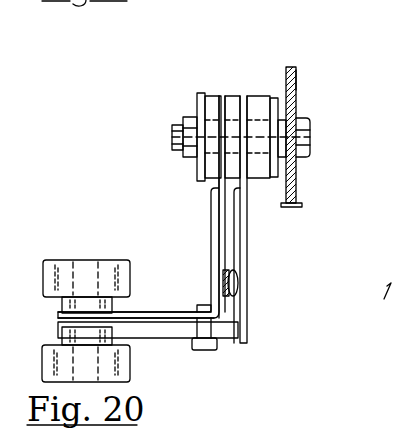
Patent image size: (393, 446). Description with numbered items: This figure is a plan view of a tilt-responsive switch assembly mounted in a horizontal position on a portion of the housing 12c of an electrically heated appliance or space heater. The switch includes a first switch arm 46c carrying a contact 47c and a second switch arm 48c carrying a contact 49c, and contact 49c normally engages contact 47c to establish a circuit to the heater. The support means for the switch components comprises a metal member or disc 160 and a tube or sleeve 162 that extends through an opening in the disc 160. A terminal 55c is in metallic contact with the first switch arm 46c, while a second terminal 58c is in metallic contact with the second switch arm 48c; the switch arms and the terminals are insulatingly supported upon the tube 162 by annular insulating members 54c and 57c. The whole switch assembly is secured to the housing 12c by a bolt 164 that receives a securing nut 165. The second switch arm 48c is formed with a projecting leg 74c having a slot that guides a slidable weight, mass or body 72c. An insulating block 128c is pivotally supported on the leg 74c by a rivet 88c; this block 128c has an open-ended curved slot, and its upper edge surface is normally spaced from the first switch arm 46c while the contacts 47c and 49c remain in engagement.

The housing 12c is at (296, 166).
The first switch arm 46c is at (248, 253).
The contact 47c is at (240, 283).
The second switch arm 48c is at (212, 247).
The contact 49c is at (227, 283).
The annular insulating member 54c is at (272, 96).
The terminal 55c is at (253, 95).
The annular insulating member 57c is at (227, 95).
The second terminal 58c is at (222, 97).
The slidable weight 72c is at (40, 257).
The projecting leg 74c is at (172, 314).
The rivet 88c is at (198, 308).
The insulating block 128c is at (150, 339).
The metal member or disc 160 is at (296, 78).
The tube or sleeve 162 is at (197, 107).
The bolt 164 is at (309, 119).
The securing nut 165 is at (190, 152).